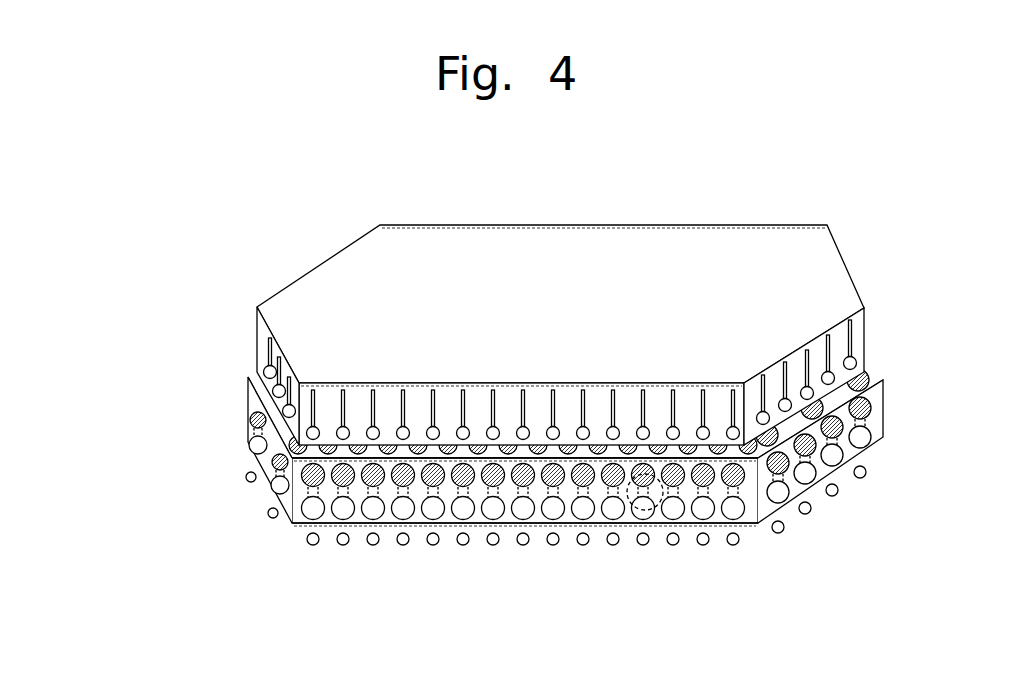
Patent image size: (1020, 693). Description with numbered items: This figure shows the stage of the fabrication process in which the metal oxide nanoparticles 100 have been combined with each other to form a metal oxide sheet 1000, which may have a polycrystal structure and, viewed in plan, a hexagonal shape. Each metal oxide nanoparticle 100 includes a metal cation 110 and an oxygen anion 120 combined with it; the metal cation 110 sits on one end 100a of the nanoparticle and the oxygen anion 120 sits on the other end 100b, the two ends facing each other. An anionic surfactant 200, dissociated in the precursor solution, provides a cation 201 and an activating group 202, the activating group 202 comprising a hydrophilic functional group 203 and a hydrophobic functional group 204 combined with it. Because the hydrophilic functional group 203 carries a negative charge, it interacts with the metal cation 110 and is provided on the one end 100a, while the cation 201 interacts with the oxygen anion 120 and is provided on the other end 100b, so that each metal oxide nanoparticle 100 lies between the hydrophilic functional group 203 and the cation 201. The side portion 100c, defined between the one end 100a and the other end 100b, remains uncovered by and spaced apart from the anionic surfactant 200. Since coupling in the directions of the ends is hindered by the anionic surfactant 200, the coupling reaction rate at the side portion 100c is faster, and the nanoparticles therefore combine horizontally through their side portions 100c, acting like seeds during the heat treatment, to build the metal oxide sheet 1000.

The metal oxide sheet 1000 is at (890, 380).
The metal oxide nanoparticle 100 is at (585, 490).
The one end of the metal oxide nanoparticle 100a is at (706, 468).
The other end of the metal oxide nanoparticle 100b is at (748, 512).
The side portion of the metal oxide nanoparticle 100c is at (633, 512).
The metal cation 110 is at (748, 477).
The oxygen anion 120 is at (748, 512).
The anionic surfactant 200 is at (108, 332).
The cation of the anionic surfactant 201 is at (246, 477).
The activating group 202 is at (485, 376).
The hydrophilic functional group 203 is at (265, 372).
The hydrophobic functional group 204 is at (272, 350).